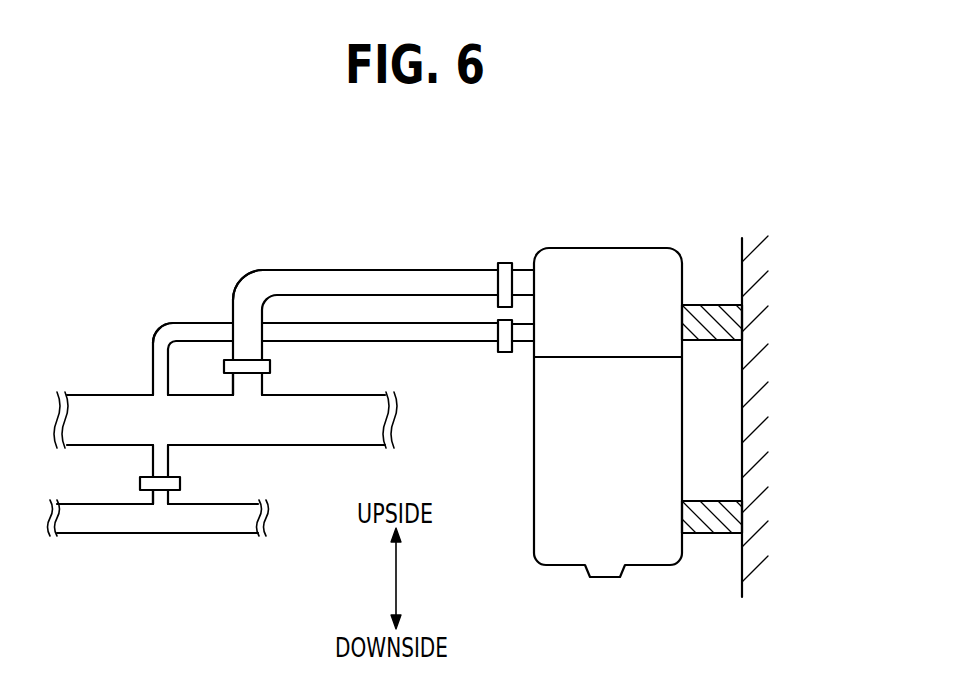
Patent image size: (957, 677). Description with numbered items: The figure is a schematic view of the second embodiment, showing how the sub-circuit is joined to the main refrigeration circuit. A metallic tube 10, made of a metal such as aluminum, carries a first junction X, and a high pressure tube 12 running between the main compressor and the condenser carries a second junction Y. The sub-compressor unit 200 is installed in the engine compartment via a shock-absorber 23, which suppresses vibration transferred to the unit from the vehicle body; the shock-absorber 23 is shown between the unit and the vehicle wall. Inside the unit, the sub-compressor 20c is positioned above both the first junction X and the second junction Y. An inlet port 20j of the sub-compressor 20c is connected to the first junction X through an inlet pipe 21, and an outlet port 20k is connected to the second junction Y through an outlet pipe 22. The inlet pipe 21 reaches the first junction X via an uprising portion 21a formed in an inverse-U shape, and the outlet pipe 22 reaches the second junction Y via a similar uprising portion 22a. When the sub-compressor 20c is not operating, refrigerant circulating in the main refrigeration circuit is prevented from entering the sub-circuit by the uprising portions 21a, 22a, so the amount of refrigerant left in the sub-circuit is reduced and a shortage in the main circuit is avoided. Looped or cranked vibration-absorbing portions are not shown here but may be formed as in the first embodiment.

The metallic tube 10 is at (101, 407).
The high pressure tube 12 is at (123, 522).
The sub-compressor 20c is at (643, 278).
The inlet port 20j is at (520, 280).
The outlet port 20k is at (522, 335).
The inlet pipe 21 is at (385, 266).
The uprising portion 21a is at (255, 288).
The outlet pipe 22 is at (316, 320).
The uprising portion 22a is at (168, 332).
The shock-absorber 23 is at (718, 318).
The sub-compressor unit 200 is at (691, 373).
The first junction X is at (242, 385).
The second junction Y is at (157, 503).